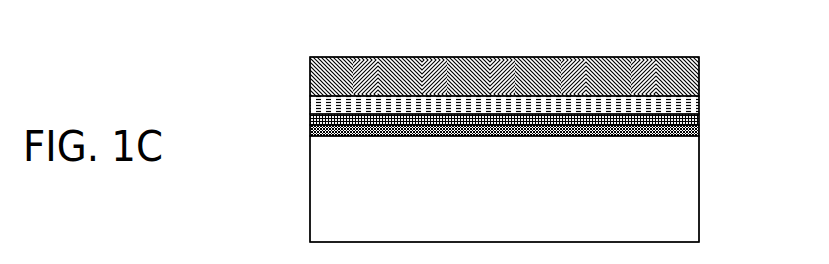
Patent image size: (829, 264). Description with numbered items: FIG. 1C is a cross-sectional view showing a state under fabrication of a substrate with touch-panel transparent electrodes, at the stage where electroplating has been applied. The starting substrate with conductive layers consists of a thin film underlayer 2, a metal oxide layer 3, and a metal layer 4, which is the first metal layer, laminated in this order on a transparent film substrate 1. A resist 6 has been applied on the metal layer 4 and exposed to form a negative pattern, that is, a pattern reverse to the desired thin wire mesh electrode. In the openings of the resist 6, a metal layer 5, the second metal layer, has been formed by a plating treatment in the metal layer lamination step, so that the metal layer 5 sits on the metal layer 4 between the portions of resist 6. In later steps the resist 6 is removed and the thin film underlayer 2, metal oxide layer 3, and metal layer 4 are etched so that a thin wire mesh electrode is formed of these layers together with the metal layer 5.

The transparent film substrate 1 is at (685, 188).
The thin film underlayer 2 is at (699, 130).
The metal oxide layer 3 is at (699, 118).
The metal layer 4 is at (699, 107).
The metal layer 5 is at (645, 57).
The resist 6 is at (699, 68).